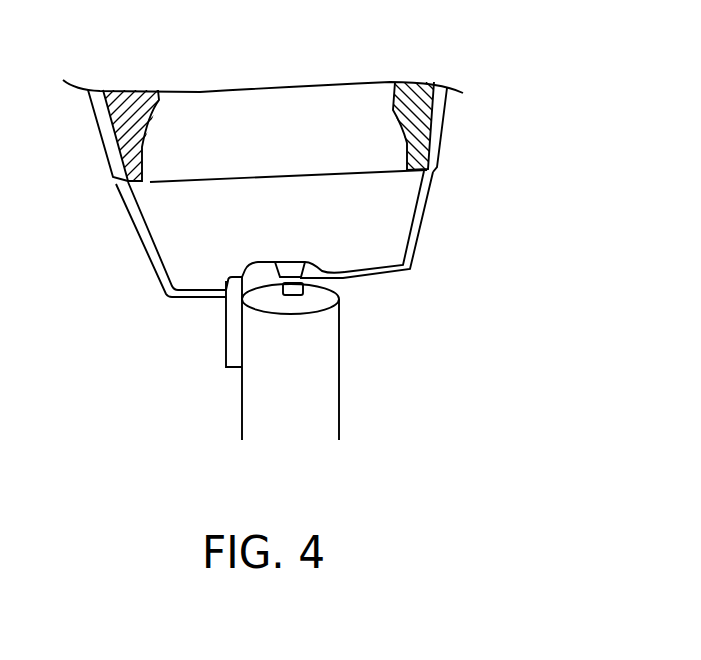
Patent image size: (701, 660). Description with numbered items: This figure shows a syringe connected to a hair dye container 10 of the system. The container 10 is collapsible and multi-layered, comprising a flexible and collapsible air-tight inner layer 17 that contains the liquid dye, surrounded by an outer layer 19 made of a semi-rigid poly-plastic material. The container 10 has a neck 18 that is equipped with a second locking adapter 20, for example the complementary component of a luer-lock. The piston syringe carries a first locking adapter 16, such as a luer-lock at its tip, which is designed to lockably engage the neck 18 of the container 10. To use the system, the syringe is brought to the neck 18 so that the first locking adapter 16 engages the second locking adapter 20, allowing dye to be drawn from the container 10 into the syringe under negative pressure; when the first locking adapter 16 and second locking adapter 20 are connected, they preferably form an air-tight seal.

The dye container 10 is at (527, 137).
The first locking adapter 16 is at (226, 310).
The inner layer 17 is at (165, 160).
The neck 18 is at (342, 290).
The outer layer 19 is at (447, 132).
The second locking adapter 20 is at (342, 280).